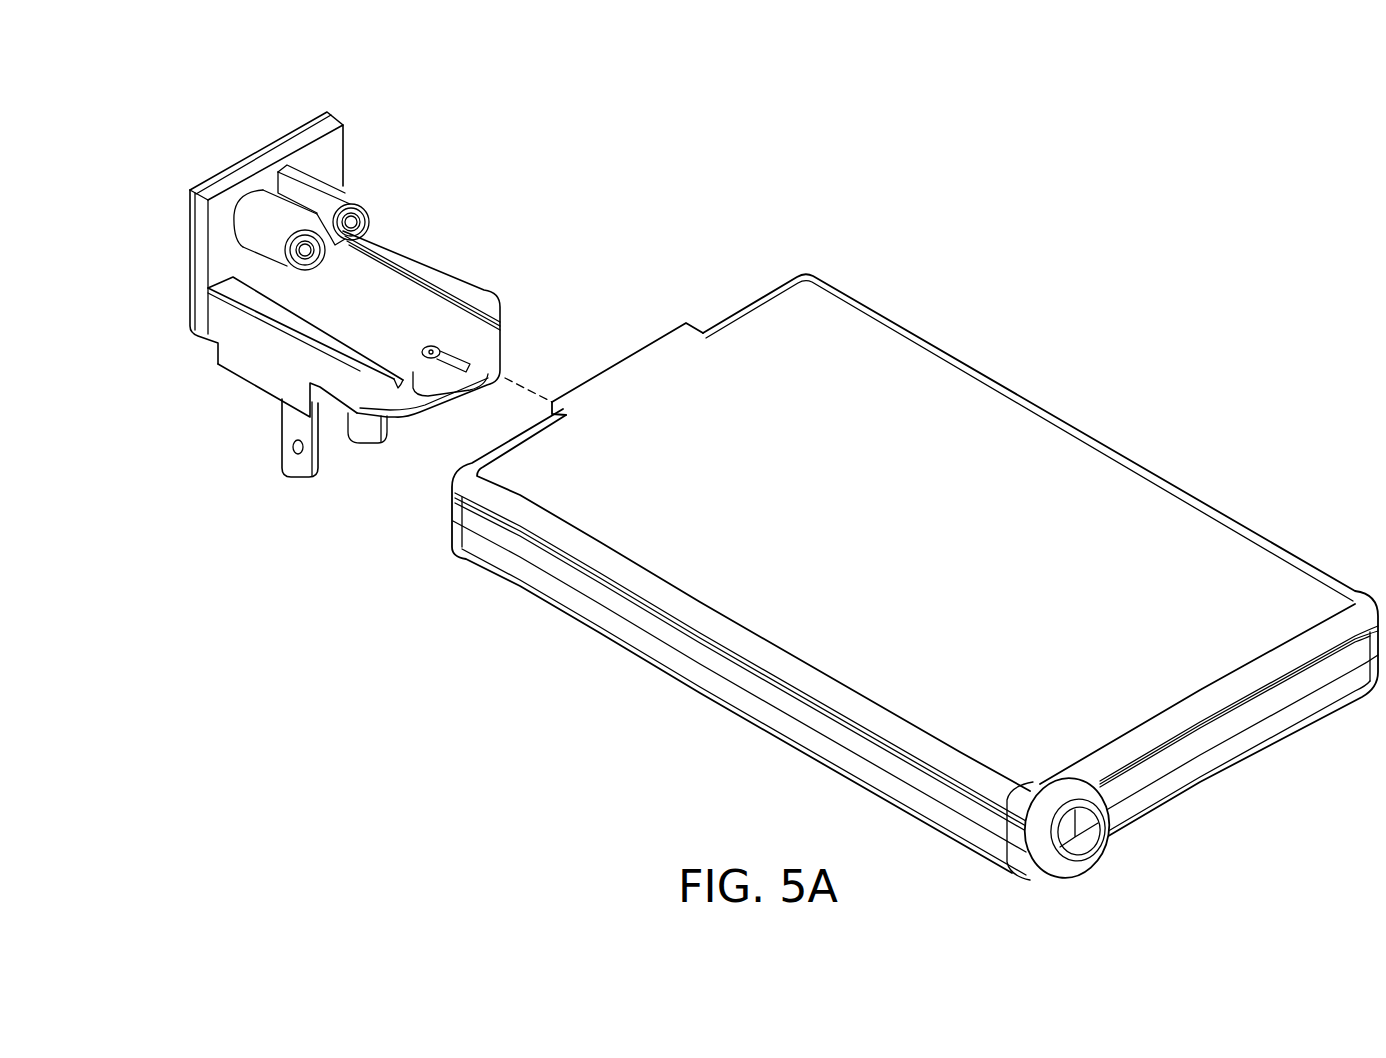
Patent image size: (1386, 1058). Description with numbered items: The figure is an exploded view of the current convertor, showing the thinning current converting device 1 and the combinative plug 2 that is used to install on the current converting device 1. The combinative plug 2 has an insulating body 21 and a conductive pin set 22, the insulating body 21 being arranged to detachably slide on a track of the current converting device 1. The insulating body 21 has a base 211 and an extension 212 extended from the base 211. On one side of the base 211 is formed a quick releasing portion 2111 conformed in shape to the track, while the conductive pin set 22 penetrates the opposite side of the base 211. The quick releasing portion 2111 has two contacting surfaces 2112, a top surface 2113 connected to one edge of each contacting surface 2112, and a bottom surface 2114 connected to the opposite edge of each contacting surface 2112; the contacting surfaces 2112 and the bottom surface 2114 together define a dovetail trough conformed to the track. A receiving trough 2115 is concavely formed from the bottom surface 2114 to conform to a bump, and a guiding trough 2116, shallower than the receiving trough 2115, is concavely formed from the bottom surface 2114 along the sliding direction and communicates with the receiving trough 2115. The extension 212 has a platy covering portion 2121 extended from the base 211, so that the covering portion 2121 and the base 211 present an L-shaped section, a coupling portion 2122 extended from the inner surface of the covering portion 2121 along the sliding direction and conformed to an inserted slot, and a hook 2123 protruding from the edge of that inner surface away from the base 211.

The current converting device 1 is at (1040, 392).
The combinative plug 2 is at (335, 310).
The insulating body 21 is at (335, 310).
The base 211 is at (379, 348).
The extension 212 is at (255, 242).
The conductive pin set 22 is at (284, 437).
The quick releasing portion 2111 is at (570, 255).
The contacting surfaces 2112 is at (398, 390).
The top surface 2113 is at (328, 350).
The bottom surface 2114 is at (394, 328).
The receiving trough 2115 is at (430, 346).
The guiding trough 2116 is at (466, 356).
The covering portion 2121 is at (218, 210).
The coupling portion 2122 is at (320, 186).
The hook 2123 is at (280, 162).